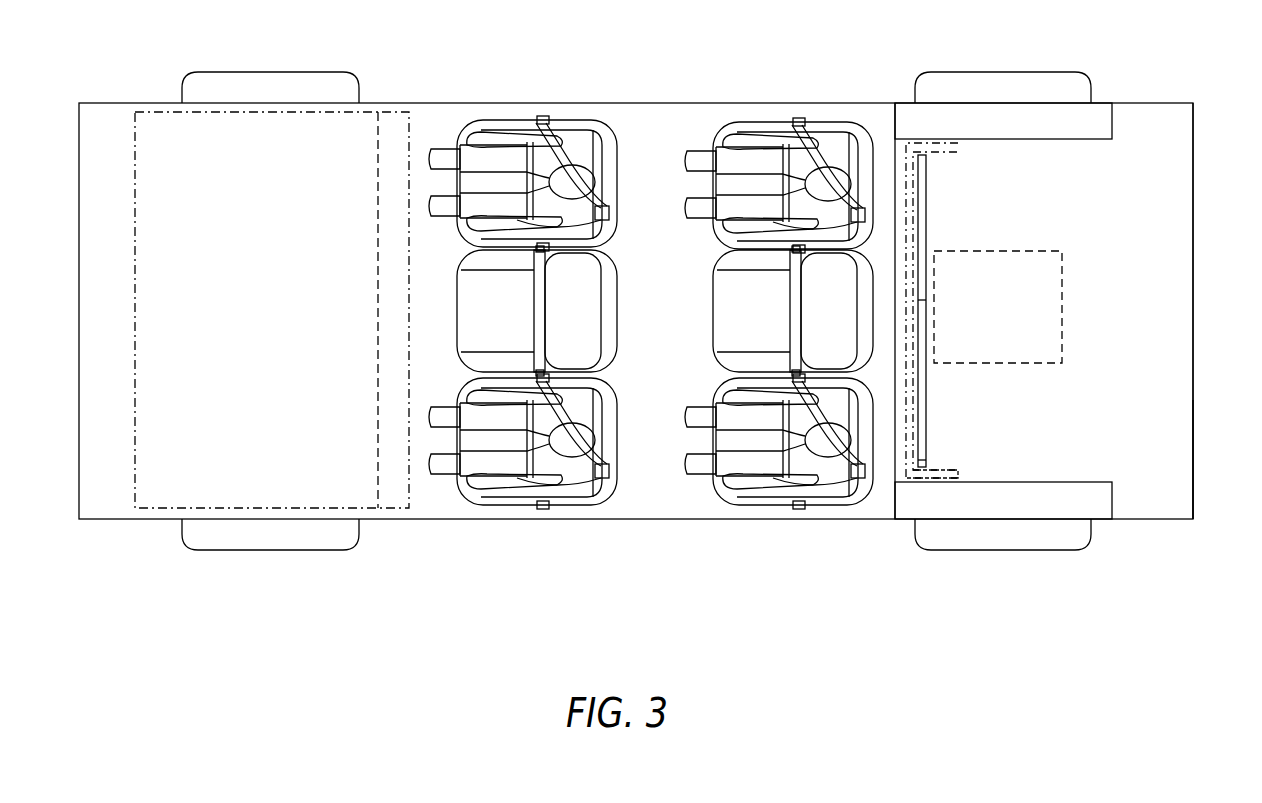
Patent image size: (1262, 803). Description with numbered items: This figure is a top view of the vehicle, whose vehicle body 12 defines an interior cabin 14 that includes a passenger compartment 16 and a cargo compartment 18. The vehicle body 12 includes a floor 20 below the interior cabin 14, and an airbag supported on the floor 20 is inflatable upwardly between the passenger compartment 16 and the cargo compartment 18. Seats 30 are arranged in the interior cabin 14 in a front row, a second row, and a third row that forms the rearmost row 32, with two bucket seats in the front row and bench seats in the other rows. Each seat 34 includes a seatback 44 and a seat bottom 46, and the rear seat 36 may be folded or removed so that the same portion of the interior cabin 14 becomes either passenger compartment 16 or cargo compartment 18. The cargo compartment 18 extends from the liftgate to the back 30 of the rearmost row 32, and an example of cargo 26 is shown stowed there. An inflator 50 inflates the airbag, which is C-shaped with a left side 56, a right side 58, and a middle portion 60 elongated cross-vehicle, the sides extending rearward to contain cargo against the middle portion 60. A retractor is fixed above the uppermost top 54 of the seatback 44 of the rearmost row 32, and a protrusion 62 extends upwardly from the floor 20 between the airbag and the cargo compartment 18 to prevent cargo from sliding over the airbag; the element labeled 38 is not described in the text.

The vehicle body 12 is at (660, 103).
The interior cabin 14 is at (656, 502).
The passenger compartment 16 is at (442, 500).
The cargo compartment 18 is at (1130, 200).
The floor 20 is at (1170, 388).
The cargo 26 is at (1062, 270).
The seats 30 is at (876, 122).
The rearmost row 32 is at (783, 532).
The seat 34 is at (425, 188).
The rear seat 36 is at (683, 188).
The tailgate 38 is at (1170, 462).
The seatback 44 is at (840, 122).
The seat bottom 46 is at (497, 120).
The inflator 50 is at (893, 318).
The uppermost top 54 is at (862, 292).
The left side 56 is at (945, 470).
The right side 58 is at (950, 150).
The middle portion 60 is at (924, 214).
The protrusion 62 is at (927, 383).